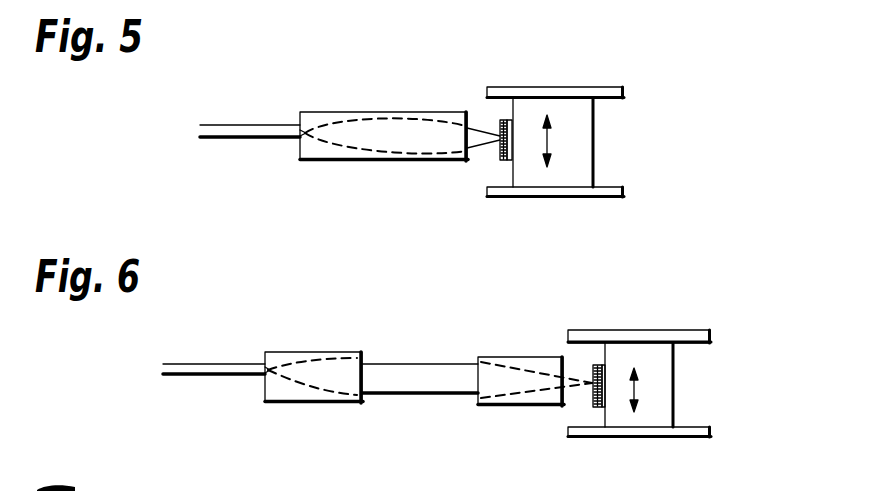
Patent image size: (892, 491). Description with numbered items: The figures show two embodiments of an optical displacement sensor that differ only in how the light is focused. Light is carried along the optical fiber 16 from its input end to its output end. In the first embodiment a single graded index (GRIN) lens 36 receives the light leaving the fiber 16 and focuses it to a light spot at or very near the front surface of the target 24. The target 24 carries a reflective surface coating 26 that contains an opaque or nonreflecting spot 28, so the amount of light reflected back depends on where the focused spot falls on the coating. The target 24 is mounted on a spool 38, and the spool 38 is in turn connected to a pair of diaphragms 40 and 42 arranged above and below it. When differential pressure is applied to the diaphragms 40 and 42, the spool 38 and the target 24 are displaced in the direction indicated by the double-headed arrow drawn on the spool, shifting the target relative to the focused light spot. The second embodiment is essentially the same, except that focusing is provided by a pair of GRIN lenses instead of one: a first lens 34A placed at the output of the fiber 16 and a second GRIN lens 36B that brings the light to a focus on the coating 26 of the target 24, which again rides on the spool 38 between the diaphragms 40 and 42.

In FIG. 5, the optical fiber 16 is at (237, 127).
In FIG. 6, the optical fiber 16 is at (195, 365).
In FIG. 5, the target 24 is at (508, 162).
In FIG. 6, the target 24 is at (603, 370).
In FIG. 5, the reflective surface coating 26 is at (501, 128).
In FIG. 6, the reflective surface coating 26 is at (593, 367).
In FIG. 5, the nonreflecting spot 28 is at (502, 143).
In FIG. 6, the nonreflecting spot 28 is at (593, 390).
In FIG. 6, the collimating lens 34A is at (298, 353).
In FIG. 5, the graded index (GRIN) lens 36 is at (340, 112).
In FIG. 6, the GRIN lens 36B is at (518, 357).
In FIG. 5, the spool 38 is at (574, 146).
In FIG. 6, the spool 38 is at (660, 388).
In FIG. 5, the diaphragm 40 is at (598, 89).
In FIG. 6, the diaphragm 40 is at (695, 330).
In FIG. 5, the diaphragm 42 is at (603, 197).
In FIG. 6, the diaphragm 42 is at (693, 437).